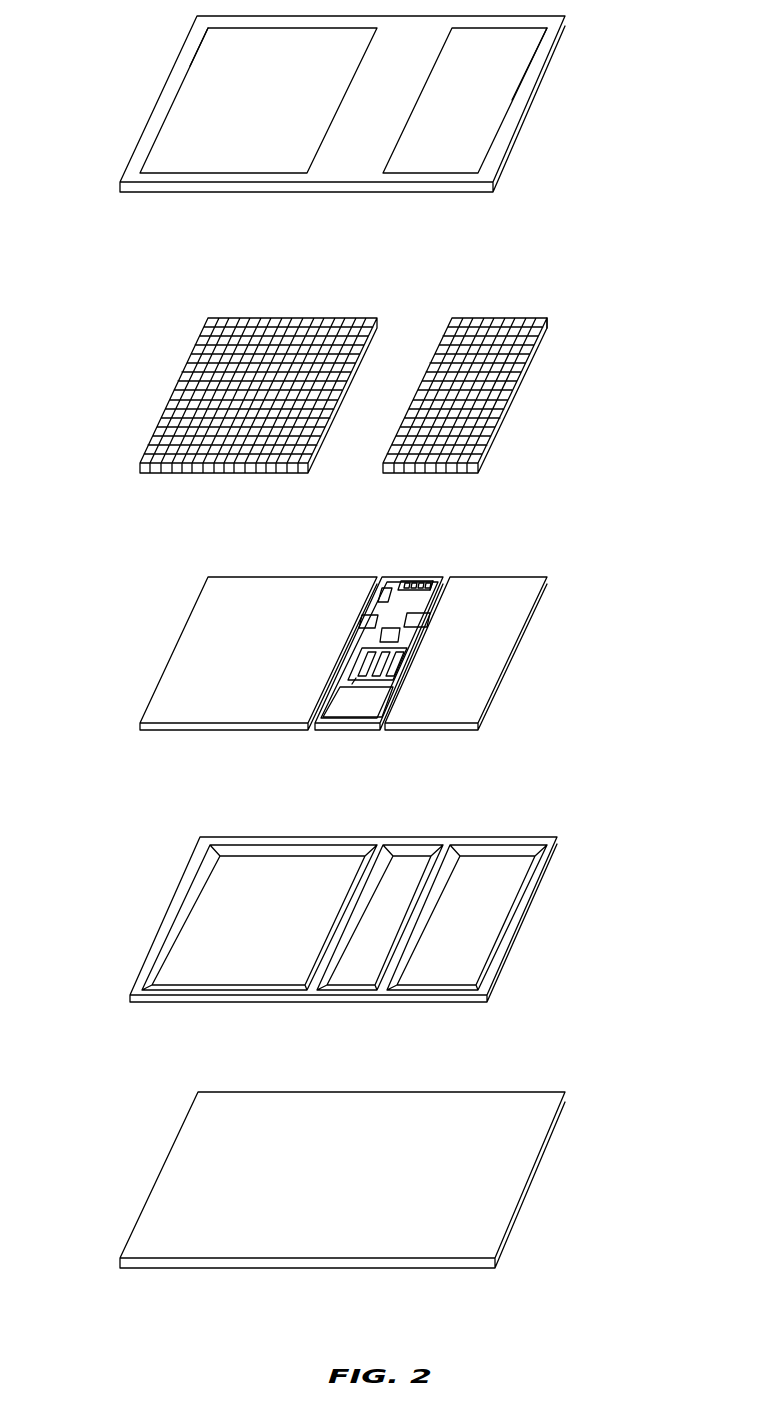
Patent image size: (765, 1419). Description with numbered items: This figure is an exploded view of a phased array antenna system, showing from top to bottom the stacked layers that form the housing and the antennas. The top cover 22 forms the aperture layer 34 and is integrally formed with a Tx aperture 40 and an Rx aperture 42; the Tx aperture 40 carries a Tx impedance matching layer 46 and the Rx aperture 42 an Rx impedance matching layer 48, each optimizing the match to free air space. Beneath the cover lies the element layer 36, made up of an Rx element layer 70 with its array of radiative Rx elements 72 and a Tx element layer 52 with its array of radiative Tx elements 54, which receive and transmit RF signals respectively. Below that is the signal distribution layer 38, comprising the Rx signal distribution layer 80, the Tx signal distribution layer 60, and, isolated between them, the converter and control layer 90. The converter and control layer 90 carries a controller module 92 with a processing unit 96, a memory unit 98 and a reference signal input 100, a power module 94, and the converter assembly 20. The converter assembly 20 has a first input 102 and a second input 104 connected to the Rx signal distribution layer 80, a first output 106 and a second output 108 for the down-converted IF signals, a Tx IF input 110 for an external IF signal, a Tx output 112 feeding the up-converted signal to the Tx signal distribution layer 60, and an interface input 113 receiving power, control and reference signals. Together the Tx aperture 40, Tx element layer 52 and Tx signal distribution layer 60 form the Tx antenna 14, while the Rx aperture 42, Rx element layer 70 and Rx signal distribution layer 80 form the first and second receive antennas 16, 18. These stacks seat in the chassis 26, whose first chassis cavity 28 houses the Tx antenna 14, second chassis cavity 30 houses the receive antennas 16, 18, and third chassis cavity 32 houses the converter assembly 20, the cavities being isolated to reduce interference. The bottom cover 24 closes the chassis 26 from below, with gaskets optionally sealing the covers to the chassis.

The Tx antenna 14 is at (375, 211).
The first receive antenna 16 is at (218, 230).
The second receive antenna 18 is at (133, 211).
The converter assembly 20 is at (383, 577).
The top cover 22 is at (160, 98).
The bottom cover 24 is at (532, 1185).
The chassis 26 is at (387, 921).
The first chassis cavity 28 is at (461, 932).
The second chassis cavity 30 is at (251, 932).
The third chassis cavity 32 is at (372, 932).
The aperture layer 34 is at (374, 132).
The element layer 36 is at (384, 391).
The signal distribution layer 38 is at (384, 649).
The Tx aperture 40 is at (456, 109).
The Rx aperture 42 is at (247, 109).
The Tx impedance matching layer 46 is at (512, 100).
The Rx impedance matching layer 48 is at (190, 70).
The Tx element layer 52 is at (513, 397).
The Tx element 54 is at (566, 329).
The Tx signal distribution layer 60 is at (520, 637).
The Rx element layer 70 is at (172, 468).
The Rx element 72 is at (275, 318).
The Rx signal distribution layer 80 is at (170, 732).
The converter and control layer 90 is at (347, 732).
The controller module 92 is at (377, 682).
The power module 94 is at (344, 716).
The processing unit 96 is at (390, 668).
The memory unit 98 is at (372, 647).
The reference signal input 100 is at (350, 669).
The first input 102 is at (375, 592).
The second input 104 is at (365, 620).
The first output 106 is at (423, 562).
The second output 108 is at (420, 580).
The Tx IF input 110 is at (433, 583).
The Tx output 112 is at (414, 618).
The interface input 113 is at (385, 633).